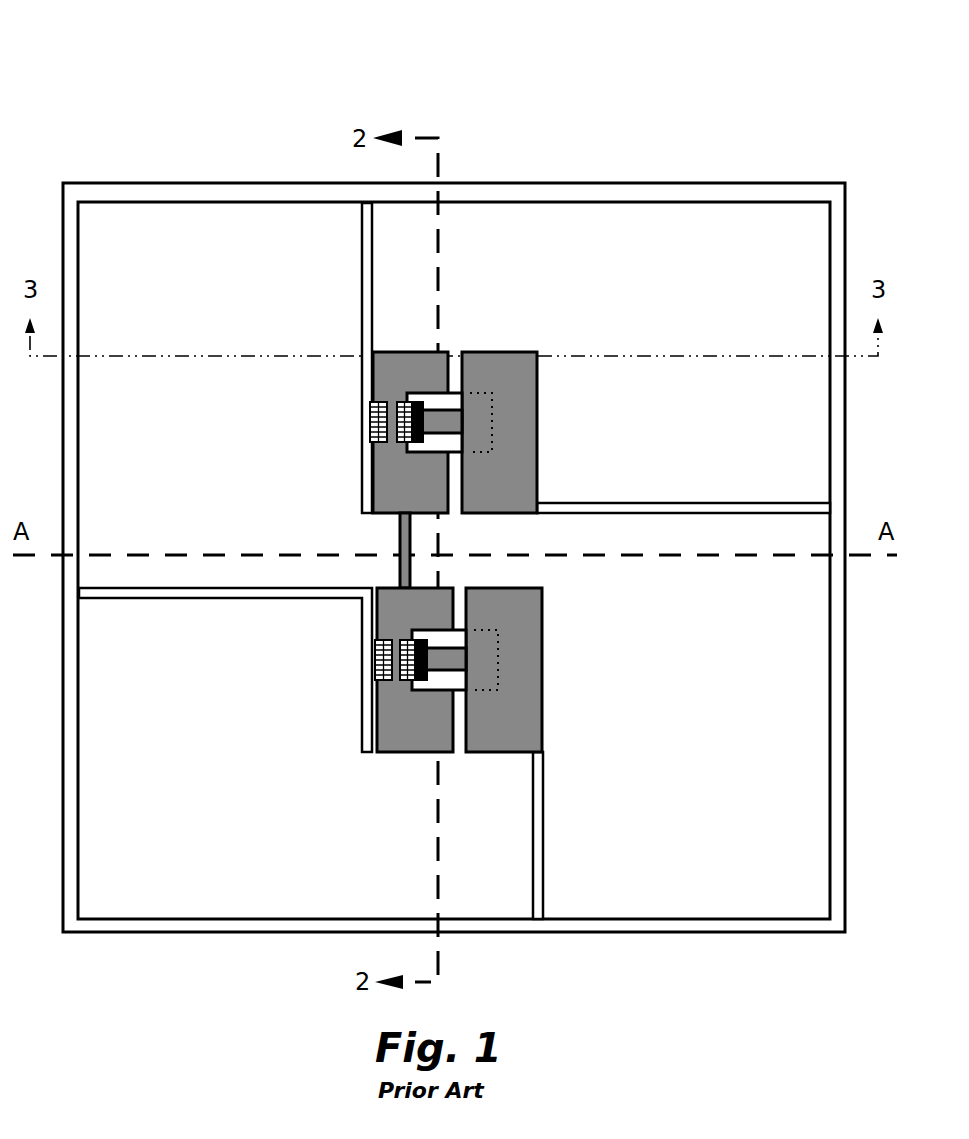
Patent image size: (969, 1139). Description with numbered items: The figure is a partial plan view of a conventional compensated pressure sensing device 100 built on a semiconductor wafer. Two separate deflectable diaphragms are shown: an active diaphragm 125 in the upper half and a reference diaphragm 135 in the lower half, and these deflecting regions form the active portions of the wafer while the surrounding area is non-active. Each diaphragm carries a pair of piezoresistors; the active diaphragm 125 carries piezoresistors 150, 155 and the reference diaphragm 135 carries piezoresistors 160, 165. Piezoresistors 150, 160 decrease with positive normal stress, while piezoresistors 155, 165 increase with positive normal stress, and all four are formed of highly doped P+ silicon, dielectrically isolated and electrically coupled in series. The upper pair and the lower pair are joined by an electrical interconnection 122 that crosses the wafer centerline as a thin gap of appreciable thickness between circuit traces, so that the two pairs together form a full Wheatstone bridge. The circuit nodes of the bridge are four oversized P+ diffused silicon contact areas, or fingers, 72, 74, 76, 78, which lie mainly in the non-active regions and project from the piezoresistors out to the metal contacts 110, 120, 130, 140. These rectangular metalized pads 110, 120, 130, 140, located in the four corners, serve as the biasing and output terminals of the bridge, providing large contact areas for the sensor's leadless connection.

The compensated pressure sensing device 100 is at (137, 68).
The metal contact 110 is at (165, 334).
The metal contact 120 is at (777, 334).
The metal contact 130 is at (178, 768).
The metal contact 140 is at (758, 768).
The contact area 72 is at (725, 462).
The contact area 74 is at (177, 685).
The contact area 76 is at (730, 672).
The contact area 78 is at (177, 470).
The electrical interconnection 122 is at (398, 540).
The active diaphragm 125 is at (513, 422).
The reference diaphragm 135 is at (513, 703).
The piezoresistor 150 is at (380, 405).
The piezoresistor 155 is at (402, 405).
The piezoresistor 160 is at (386, 683).
The piezoresistor 165 is at (428, 682).